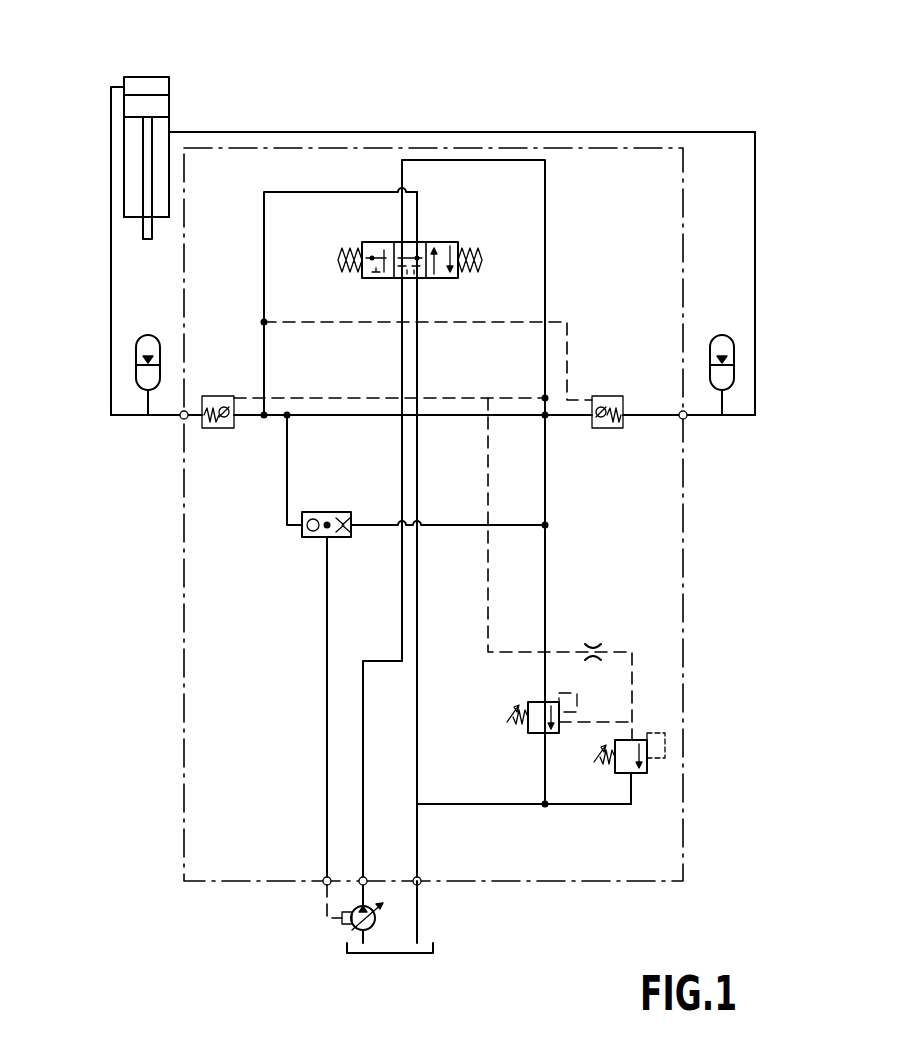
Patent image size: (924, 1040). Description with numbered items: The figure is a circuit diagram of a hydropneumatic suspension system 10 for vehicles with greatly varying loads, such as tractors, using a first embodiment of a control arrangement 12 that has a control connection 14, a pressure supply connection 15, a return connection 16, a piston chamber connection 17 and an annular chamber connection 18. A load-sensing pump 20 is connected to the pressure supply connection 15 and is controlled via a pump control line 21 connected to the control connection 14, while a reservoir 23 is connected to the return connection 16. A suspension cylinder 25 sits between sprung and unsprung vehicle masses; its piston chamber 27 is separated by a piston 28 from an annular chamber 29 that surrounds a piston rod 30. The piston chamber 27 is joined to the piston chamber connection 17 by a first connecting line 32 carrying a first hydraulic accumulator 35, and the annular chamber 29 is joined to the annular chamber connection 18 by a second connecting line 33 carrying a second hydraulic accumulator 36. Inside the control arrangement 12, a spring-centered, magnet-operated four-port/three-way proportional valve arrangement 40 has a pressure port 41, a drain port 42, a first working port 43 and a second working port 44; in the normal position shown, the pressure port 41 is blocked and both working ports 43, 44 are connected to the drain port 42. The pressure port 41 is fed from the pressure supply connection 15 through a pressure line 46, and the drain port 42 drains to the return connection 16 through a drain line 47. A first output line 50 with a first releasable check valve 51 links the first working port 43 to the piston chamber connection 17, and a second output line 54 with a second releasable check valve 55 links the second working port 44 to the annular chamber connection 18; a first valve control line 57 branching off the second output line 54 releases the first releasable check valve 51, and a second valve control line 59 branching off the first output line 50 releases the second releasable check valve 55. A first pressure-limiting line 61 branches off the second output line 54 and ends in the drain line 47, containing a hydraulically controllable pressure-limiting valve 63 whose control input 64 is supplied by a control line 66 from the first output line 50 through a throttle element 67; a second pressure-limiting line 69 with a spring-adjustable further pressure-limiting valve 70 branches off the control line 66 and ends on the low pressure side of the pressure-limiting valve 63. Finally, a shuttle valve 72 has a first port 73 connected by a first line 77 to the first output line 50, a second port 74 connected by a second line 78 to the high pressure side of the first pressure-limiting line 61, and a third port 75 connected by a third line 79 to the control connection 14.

The hydropneumatic suspension system 10 is at (516, 94).
The control arrangement 12 is at (180, 654).
The control connection 14 is at (323, 885).
The pressure supply connection 15 is at (366, 880).
The return connection 16 is at (421, 885).
The piston chamber connection 17 is at (182, 420).
The annular chamber connection 18 is at (687, 420).
The load-sensing pump 20 is at (360, 926).
The pump control line 21 is at (330, 914).
The reservoir 23 is at (434, 946).
The suspension cylinder 25 is at (149, 137).
The piston chamber 27 is at (170, 90).
The piston 28 is at (170, 112).
The annular chamber 29 is at (134, 178).
The piston rod 30 is at (144, 228).
The first connecting line 32 is at (111, 300).
The second connecting line 33 is at (757, 240).
The first hydraulic accumulator 35 is at (142, 334).
The second hydraulic accumulator 36 is at (720, 334).
The valve arrangement 40 is at (471, 257).
The pressure port 41 is at (396, 279).
The drain port 42 is at (416, 279).
The first working port 43 is at (417, 241).
The second working port 44 is at (402, 241).
The pressure line 46 is at (363, 700).
The drain line 47 is at (418, 700).
The first output line 50 is at (264, 300).
The first releasable check valve 51 is at (218, 396).
The second output line 54 is at (547, 300).
The second releasable check valve 55 is at (612, 396).
The first valve control line 57 is at (296, 398).
The second valve control line 59 is at (296, 322).
The first pressure-limiting line 61 is at (548, 488).
The hydraulically controllable pressure-limiting valve 63 is at (538, 728).
The control input 64 is at (560, 734).
The control line 66 is at (487, 600).
The throttle element 67 is at (592, 650).
The second pressure-limiting line 69 is at (614, 806).
The further pressure-limiting valve 70 is at (636, 780).
The shuttle valve 72 is at (396, 519).
The first port 73 is at (304, 532).
The second port 74 is at (356, 533).
The third port 75 is at (325, 540).
The first line 77 is at (285, 480).
The second line 78 is at (352, 522).
The third line 79 is at (325, 603).